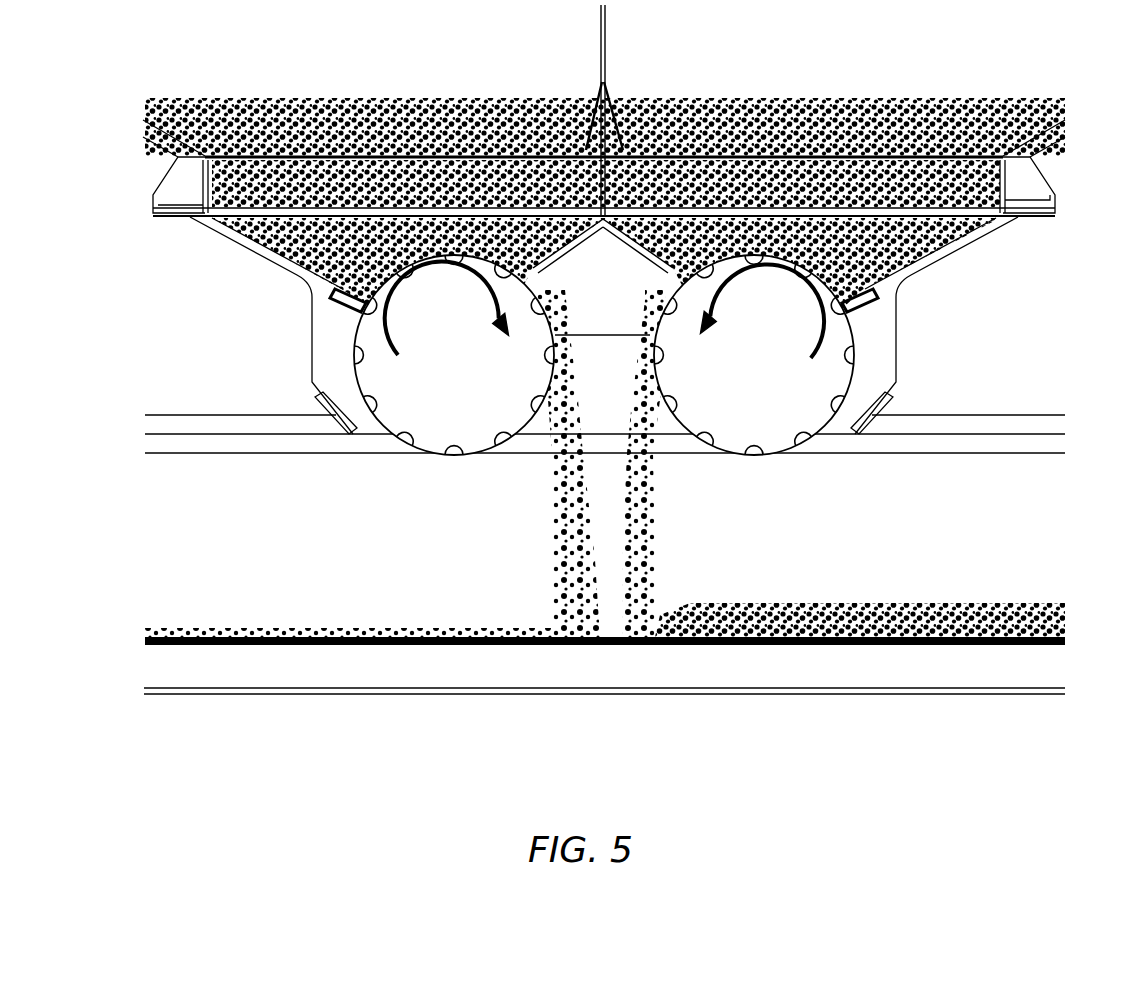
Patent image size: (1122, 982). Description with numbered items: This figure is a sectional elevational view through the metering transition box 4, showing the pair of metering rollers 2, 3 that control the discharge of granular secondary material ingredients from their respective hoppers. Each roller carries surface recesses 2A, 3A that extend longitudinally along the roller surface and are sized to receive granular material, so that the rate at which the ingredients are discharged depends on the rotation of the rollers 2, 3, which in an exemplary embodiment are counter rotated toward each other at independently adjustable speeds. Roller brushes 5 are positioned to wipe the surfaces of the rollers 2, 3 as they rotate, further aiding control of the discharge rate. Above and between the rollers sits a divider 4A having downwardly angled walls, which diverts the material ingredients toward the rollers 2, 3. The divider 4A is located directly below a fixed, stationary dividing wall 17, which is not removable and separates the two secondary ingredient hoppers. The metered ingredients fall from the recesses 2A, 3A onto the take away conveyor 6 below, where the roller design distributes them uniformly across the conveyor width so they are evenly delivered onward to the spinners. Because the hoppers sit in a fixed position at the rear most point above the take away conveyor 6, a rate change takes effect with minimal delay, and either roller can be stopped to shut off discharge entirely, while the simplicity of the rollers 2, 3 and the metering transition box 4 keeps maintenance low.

The metering roller 2 is at (440, 387).
The surface recesses 2A is at (452, 460).
The metering roller 3 is at (728, 393).
The surface recesses 3A is at (800, 437).
The metering transition box 4 is at (742, 182).
The divider 4A is at (630, 244).
The roller brushes 5 is at (683, 272).
The take away conveyor 6 is at (530, 645).
The dividing wall 17 is at (607, 36).